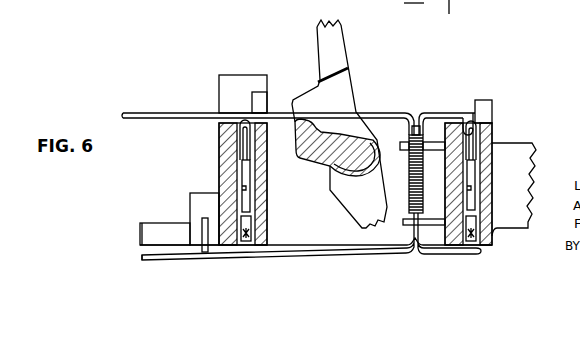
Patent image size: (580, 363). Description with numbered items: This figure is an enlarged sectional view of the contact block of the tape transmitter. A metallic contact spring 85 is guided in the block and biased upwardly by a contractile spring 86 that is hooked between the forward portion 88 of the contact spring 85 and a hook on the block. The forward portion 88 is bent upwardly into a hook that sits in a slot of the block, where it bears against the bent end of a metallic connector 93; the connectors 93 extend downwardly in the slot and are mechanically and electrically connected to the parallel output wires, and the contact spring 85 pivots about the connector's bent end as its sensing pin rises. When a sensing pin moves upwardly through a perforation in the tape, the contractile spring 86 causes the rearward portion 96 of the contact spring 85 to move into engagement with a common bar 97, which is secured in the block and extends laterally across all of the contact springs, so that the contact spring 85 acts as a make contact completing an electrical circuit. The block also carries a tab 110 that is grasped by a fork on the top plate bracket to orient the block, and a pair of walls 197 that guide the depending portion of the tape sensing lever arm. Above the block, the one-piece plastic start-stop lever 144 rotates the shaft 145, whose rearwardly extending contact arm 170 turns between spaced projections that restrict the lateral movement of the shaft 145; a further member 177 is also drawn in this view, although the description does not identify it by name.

The start-stop lever 144 is at (316, 26).
The walls 197 is at (228, 76).
The upper contact bar 177 is at (177, 112).
The contact arm 170 is at (330, 130).
The shaft 145 is at (377, 121).
The contractile spring 86 is at (434, 124).
The metallic connectors 93 is at (490, 200).
The forward portion 88 is at (460, 254).
The contact spring 85 is at (287, 250).
The rearward portion 96 is at (158, 263).
The tab 110 is at (141, 223).
The common bar 97 is at (202, 221).